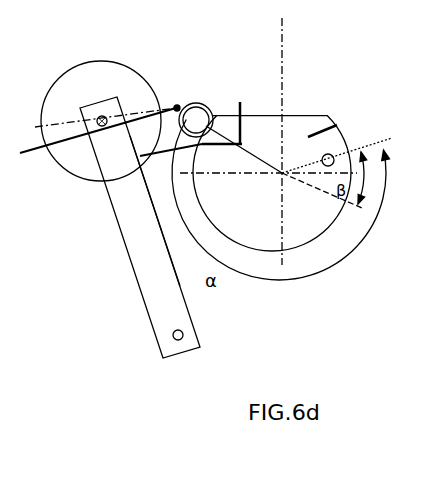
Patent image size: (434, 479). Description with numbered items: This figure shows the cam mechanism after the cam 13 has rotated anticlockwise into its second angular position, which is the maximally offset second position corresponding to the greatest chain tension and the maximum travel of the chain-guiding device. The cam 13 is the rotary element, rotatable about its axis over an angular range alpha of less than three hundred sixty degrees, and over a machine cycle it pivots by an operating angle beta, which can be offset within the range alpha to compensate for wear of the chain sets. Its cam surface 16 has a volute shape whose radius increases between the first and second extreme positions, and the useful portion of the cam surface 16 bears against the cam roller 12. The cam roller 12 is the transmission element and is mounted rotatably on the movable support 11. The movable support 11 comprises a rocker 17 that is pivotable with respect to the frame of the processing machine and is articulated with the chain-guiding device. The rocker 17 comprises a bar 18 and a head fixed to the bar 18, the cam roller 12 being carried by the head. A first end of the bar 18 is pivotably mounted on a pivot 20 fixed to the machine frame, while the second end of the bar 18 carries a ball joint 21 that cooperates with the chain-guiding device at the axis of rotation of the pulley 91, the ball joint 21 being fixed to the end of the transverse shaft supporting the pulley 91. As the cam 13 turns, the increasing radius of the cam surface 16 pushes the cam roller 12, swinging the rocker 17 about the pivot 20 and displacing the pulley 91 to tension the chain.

The pulley 91 is at (118, 80).
The cam roller 12 is at (196, 103).
The cam surface 16 is at (201, 115).
The cam 13 is at (337, 125).
The ball joint 21 is at (98, 142).
The rocker 17 is at (130, 252).
The bar 18 is at (140, 275).
The movable support 11 is at (124, 332).
The pivot 20 is at (172, 337).